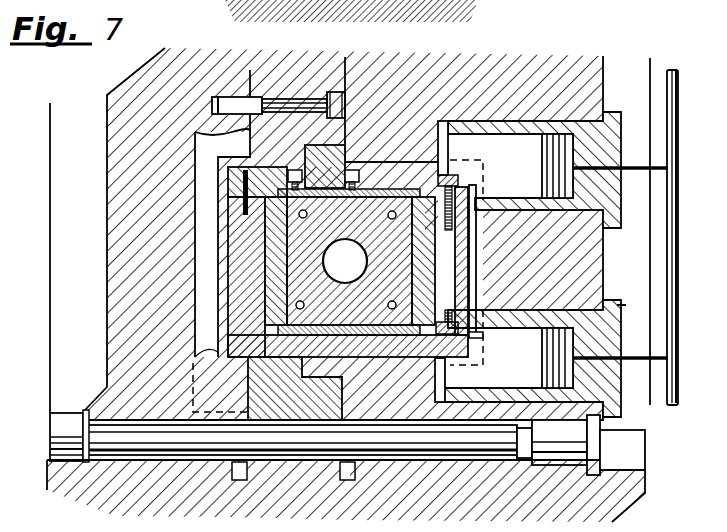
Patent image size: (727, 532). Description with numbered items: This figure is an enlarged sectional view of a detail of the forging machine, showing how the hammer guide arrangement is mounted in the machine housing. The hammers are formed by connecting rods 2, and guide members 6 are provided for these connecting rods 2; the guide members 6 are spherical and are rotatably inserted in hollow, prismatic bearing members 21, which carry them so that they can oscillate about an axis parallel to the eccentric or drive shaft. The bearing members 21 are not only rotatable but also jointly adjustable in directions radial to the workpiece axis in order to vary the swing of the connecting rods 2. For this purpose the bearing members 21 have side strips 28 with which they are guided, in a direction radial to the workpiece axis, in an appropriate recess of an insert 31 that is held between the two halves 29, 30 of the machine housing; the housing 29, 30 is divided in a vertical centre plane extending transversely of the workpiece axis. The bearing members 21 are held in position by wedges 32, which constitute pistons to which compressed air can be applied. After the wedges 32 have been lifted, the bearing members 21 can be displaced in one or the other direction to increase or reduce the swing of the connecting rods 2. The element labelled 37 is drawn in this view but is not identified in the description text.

The connecting rod 2 is at (300, 265).
The guide member 6 is at (273, 233).
The bearing member 21 is at (243, 308).
The side strip 28 is at (315, 160).
The housing half 29 is at (142, 482).
The housing half 30 is at (450, 478).
The insert 31 is at (282, 484).
The wedge 32 is at (521, 170).
The stud 37 is at (393, 172).